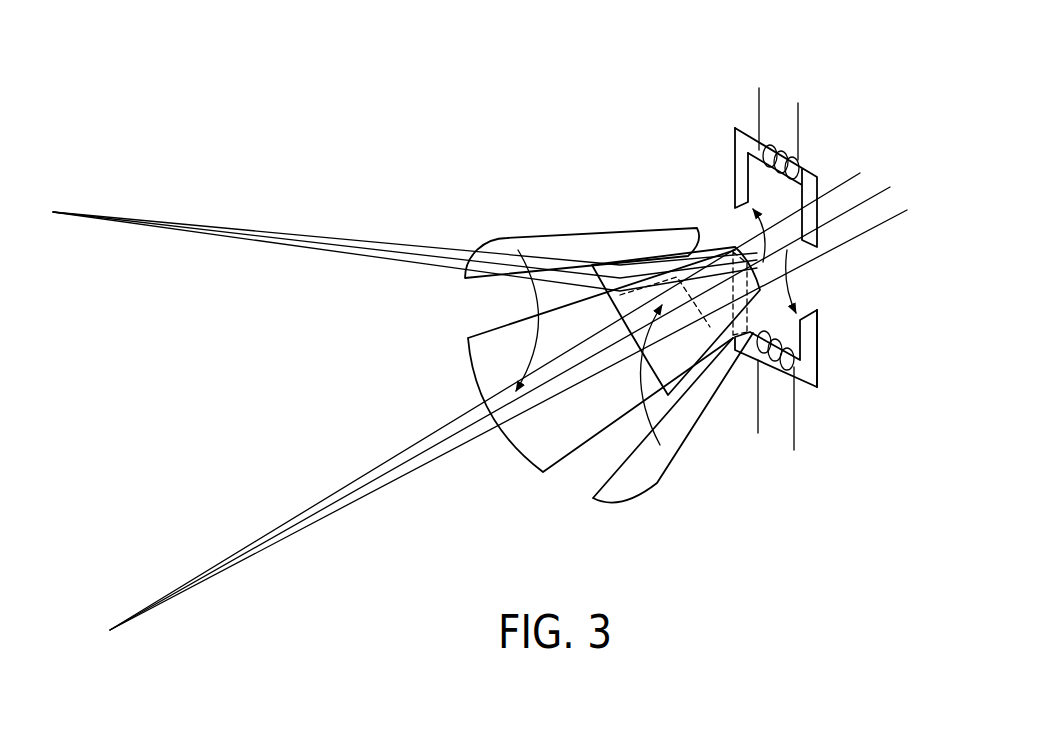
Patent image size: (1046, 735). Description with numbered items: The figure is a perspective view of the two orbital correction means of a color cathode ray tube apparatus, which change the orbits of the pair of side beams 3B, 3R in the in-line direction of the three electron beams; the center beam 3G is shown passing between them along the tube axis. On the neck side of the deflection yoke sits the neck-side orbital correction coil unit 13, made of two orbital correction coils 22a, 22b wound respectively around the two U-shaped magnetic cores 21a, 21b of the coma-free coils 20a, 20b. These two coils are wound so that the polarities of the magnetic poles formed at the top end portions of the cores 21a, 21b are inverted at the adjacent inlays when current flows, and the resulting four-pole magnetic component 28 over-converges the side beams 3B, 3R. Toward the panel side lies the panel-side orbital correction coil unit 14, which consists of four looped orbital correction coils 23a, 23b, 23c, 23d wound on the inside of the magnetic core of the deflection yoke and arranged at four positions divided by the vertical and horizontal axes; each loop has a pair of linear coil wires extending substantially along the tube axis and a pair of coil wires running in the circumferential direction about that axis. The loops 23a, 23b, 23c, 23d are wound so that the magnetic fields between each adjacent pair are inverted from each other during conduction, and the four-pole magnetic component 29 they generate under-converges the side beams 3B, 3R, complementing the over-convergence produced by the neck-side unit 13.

The side beam 3B is at (347, 482).
The center electron beam 3G is at (290, 527).
The side beam 3R is at (347, 507).
The neck-side orbital correction coil unit 13 is at (812, 117).
The panel-side orbital correction coil unit 14 is at (486, 224).
The coma-free coil 20a is at (733, 182).
The coma-free coil 20b is at (805, 438).
The U-shaped magnetic core 21a is at (735, 177).
The U-shaped magnetic core 21b is at (813, 345).
The orbital correction coil 22a is at (775, 145).
The orbital correction coil 22b is at (773, 378).
The looped orbital correction coil 23a is at (548, 235).
The looped orbital correction coil 23b is at (637, 263).
The looped orbital correction coil 23c is at (657, 485).
The looped orbital correction coil 23d is at (522, 450).
The four-pole magnetic component 28 is at (798, 288).
The four-pole magnetic component 29 is at (520, 297).